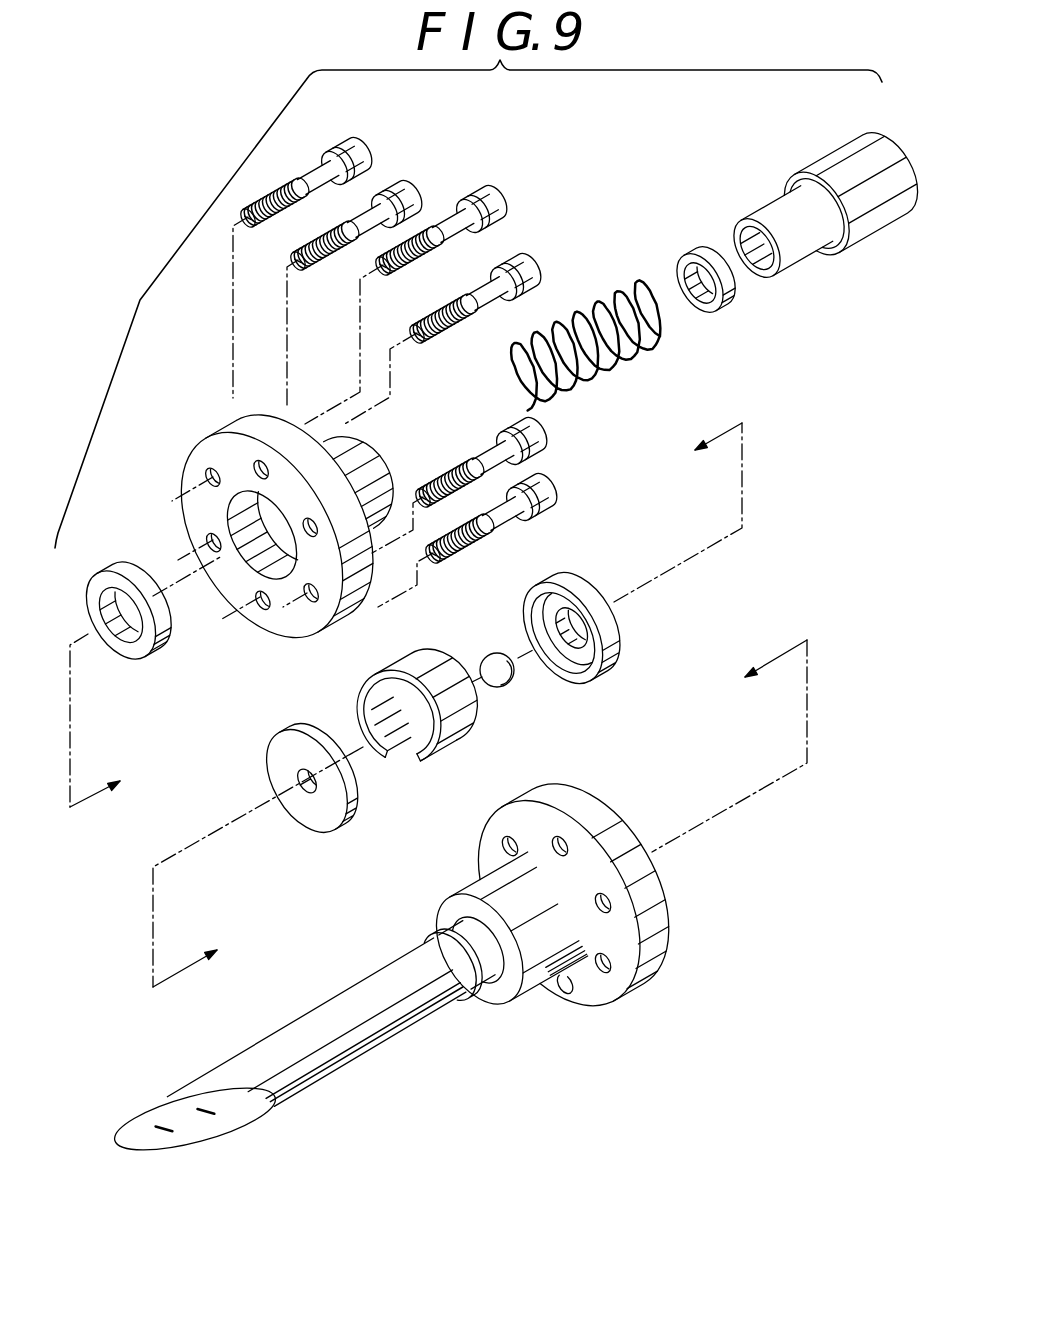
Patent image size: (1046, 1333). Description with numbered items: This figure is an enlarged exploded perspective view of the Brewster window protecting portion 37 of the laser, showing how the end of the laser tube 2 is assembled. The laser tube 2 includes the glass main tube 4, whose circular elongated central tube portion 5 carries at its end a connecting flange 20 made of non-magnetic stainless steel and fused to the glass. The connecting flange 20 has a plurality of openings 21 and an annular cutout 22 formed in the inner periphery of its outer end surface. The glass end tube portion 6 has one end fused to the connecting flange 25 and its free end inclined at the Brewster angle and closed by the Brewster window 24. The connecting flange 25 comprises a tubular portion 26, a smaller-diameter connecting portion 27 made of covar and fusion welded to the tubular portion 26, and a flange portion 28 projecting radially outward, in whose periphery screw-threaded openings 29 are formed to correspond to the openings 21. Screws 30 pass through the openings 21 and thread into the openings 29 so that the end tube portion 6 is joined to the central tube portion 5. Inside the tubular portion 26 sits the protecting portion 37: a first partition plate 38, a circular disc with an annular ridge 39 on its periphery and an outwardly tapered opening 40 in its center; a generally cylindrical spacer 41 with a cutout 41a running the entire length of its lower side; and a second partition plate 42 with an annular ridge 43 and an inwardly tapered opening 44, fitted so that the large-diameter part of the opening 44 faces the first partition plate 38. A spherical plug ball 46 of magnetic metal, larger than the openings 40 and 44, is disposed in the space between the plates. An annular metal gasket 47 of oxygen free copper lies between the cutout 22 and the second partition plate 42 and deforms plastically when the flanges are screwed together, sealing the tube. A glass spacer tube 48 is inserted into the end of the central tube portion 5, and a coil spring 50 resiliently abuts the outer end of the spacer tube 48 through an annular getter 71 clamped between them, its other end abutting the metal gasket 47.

The laser tube 2 is at (873, 235).
The glass main tube 4 is at (859, 242).
The central tube portion 5 is at (854, 226).
The end tube portion 6 is at (302, 1062).
The connecting flange 20 is at (281, 512).
The openings 21 is at (208, 472).
The annular cutout 22 is at (247, 553).
The Brewster window 24 is at (200, 1116).
The connecting flange 25 is at (609, 909).
The tubular portion 26 is at (548, 990).
The connecting portion 27 is at (490, 985).
The flange portion 28 is at (658, 896).
The screw-threaded openings 29 is at (562, 842).
The screws 30 is at (395, 205).
The Brewster window protecting portion 37 is at (604, 617).
The first partition plate 38 is at (302, 806).
The annular ridge 39 is at (337, 787).
The outwardly tapered opening 40 is at (299, 779).
The spacer 41 is at (420, 711).
The cutout 41a is at (398, 765).
The second partition plate 42 is at (620, 650).
The annular ridge 43 is at (563, 672).
The inwardly tapered opening 44 is at (613, 620).
The spherical plug ball 46 is at (496, 688).
The metal gasket 47 is at (137, 657).
The spacer tube 48 is at (797, 258).
The coil spring 50 is at (588, 330).
The getter 71 is at (730, 300).